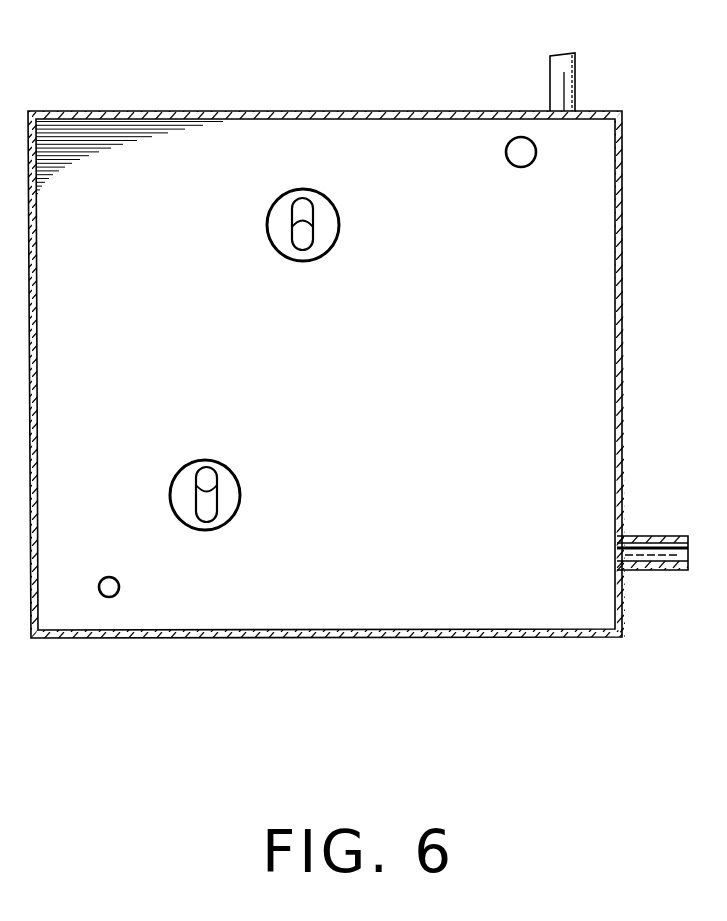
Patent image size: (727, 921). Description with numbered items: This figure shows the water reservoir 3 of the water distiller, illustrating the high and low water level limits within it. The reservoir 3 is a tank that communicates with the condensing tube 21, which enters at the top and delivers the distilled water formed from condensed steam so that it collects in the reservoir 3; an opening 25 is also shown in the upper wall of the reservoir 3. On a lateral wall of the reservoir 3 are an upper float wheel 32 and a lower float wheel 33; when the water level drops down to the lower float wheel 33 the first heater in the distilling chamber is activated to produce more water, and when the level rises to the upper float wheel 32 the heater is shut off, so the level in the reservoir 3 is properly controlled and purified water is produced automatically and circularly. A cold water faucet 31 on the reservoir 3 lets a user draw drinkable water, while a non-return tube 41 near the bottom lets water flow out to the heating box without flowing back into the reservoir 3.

The water reservoir 3 is at (592, 381).
The condensing tube 21 is at (573, 78).
The opening 25 is at (527, 153).
The cold water faucet 31 is at (658, 557).
The upper float wheel 32 is at (332, 222).
The lower float wheel 33 is at (233, 490).
The non-return tube 41 is at (111, 592).